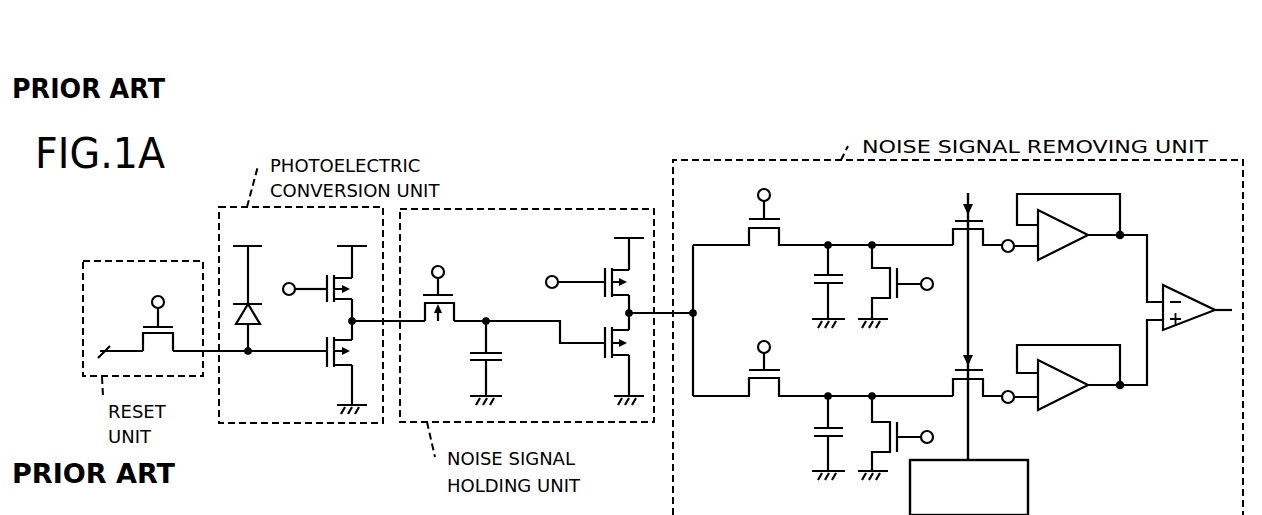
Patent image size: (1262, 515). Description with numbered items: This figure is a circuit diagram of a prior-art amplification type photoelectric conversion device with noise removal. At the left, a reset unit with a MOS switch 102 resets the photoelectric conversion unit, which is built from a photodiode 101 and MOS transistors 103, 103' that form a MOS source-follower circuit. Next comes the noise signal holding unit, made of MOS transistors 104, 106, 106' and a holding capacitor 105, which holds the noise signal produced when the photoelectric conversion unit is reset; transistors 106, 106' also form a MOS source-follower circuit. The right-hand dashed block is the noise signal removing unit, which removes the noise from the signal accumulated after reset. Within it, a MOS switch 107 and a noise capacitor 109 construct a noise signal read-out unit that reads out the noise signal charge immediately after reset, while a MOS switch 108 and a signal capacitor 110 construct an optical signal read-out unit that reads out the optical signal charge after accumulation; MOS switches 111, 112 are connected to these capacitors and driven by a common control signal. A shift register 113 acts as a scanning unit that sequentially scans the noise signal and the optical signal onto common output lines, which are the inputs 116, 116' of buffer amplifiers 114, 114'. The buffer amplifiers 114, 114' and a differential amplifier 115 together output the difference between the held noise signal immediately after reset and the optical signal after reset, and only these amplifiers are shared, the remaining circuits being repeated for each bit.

The photodiode 101 is at (259, 313).
The reset MOS transistor 102 is at (151, 313).
The MOS transistor 103 is at (324, 375).
The MOS transistor 103' is at (319, 293).
The MOS transistor 104 is at (462, 300).
The capacitor CM 105 is at (470, 354).
The MOS transistor 106 is at (597, 366).
The MOS transistor 106' is at (588, 284).
The MOS switch 107 is at (784, 223).
The MOS switch 108 is at (784, 374).
The capacitor CTN 109 is at (850, 273).
The capacitor CTS 110 is at (812, 443).
The noise signal removing unit element 111 is at (880, 305).
The noise signal removing unit element 112 is at (895, 462).
The shift register 113 is at (997, 459).
The buffer amplifier 114 is at (1090, 248).
The buffer amplifier 114' is at (1090, 386).
The differential amplifier 115 is at (1184, 329).
The input of buffer amplifier 116 is at (995, 263).
The input of buffer amplifier 116' is at (995, 368).